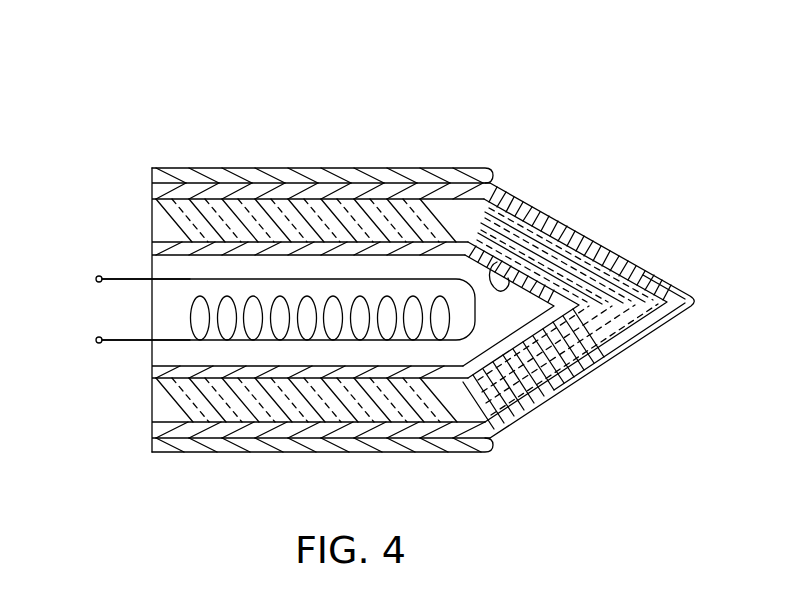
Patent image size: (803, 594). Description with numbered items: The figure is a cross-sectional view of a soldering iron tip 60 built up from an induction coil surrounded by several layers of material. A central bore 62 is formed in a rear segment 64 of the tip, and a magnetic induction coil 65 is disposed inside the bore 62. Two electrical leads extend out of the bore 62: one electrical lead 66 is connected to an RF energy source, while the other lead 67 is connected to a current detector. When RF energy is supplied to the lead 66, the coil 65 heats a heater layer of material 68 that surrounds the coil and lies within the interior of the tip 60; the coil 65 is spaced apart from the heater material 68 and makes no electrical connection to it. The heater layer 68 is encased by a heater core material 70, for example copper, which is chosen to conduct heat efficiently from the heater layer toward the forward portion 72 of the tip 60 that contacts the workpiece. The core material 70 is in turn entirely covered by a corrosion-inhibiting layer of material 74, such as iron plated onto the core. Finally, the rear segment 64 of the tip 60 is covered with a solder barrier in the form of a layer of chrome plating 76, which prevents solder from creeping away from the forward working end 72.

The soldering iron tip 60 is at (420, 44).
The central bore 62 is at (170, 301).
The rear segment 64 is at (220, 113).
The magnetic induction coil 65 is at (305, 302).
The electrical lead 66 is at (100, 336).
The electrical lead 67 is at (100, 276).
The heater layer 68 is at (513, 222).
The heater core material 70 is at (586, 292).
The forward portion 72 is at (634, 131).
The corrosion-inhibiting layer 74 is at (655, 275).
The chrome plating 76 is at (416, 168).